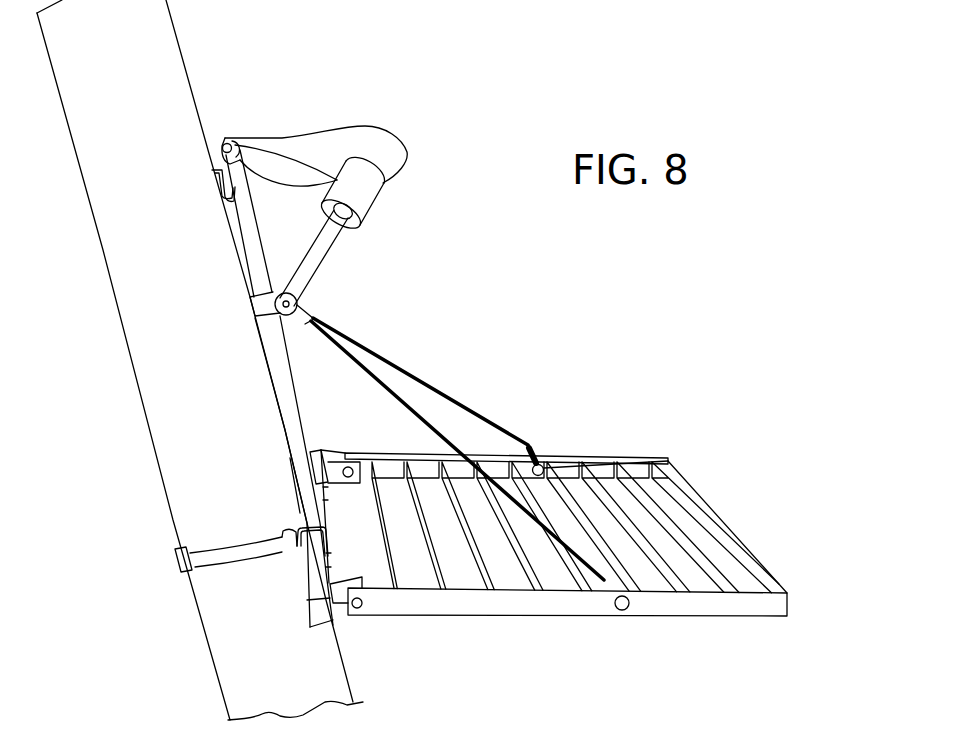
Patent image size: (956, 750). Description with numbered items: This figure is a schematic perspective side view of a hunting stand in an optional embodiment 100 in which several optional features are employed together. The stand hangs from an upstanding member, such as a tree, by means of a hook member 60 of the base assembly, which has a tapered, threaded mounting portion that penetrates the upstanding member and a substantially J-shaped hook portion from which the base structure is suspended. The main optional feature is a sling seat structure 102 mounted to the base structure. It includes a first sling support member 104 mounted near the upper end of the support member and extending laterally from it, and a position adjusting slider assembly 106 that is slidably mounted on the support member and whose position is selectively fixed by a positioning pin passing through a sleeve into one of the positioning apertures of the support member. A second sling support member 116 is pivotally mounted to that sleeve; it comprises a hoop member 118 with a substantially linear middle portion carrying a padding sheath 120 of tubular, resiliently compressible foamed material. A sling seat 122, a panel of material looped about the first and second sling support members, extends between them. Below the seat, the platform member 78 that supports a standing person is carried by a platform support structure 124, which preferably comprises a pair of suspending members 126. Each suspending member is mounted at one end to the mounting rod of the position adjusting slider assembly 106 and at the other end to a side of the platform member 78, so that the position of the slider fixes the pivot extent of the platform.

The hook member 60 is at (220, 189).
The platform member 78 is at (640, 423).
The optional embodiment 100 is at (600, 327).
The sling seat structure 102 is at (383, 97).
The first sling support member 104 is at (226, 138).
The position adjusting slider assembly 106 is at (254, 318).
The second sling support member 116 is at (303, 275).
The hoop member 118 is at (318, 263).
The padding sheath 120 is at (365, 197).
The sling seat 122 is at (397, 149).
The platform support structure 124 is at (400, 324).
The suspending members 126 is at (468, 406).